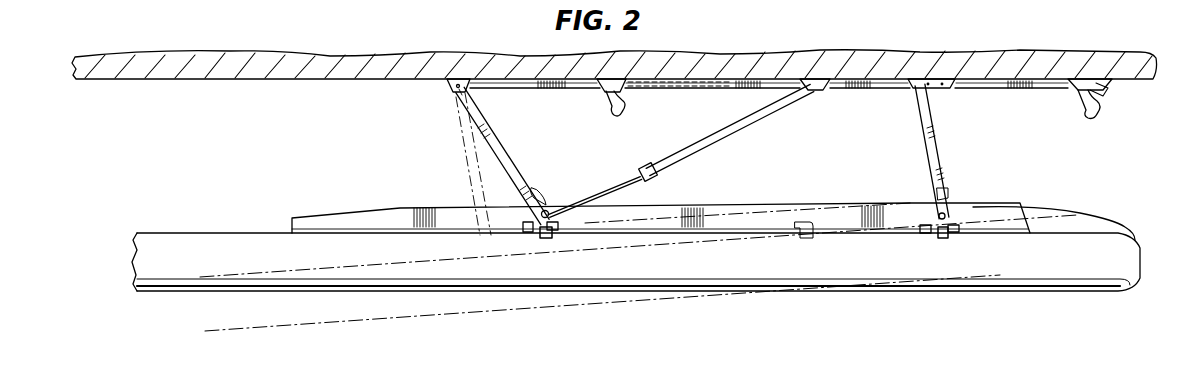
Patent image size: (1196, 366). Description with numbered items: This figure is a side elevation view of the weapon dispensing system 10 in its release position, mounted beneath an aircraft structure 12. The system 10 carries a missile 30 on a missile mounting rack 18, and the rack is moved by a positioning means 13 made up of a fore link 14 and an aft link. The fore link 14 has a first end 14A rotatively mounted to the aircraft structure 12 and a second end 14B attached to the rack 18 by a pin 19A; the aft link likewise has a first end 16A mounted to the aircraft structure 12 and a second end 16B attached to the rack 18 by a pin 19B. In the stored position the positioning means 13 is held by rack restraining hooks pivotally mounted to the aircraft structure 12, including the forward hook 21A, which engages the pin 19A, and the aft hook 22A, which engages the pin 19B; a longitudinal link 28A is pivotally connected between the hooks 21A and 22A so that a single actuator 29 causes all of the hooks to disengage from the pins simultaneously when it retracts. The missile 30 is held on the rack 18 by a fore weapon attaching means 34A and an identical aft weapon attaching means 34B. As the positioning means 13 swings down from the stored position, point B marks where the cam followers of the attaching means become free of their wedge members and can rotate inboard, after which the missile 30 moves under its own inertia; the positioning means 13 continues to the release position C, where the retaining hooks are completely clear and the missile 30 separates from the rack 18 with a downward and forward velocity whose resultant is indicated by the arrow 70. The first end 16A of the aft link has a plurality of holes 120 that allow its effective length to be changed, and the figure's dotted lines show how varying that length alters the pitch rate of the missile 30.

The weapon dispensing system 10 is at (1078, 50).
The aircraft structure 12 is at (1030, 34).
The holes 120 is at (940, 76).
The positioning means 13 is at (720, 140).
The fore link 14 is at (510, 158).
The first end of fore link 14A is at (456, 91).
The second end of fore link 14B is at (527, 213).
The first end of aft link 16A is at (929, 104).
The second end of aft link 16B is at (933, 213).
The missile mounting rack 18 is at (350, 218).
The pin 19A is at (541, 206).
The pin 19B is at (950, 210).
The forward rack restraining hook 21A is at (630, 112).
The aft rack restraining hook 22A is at (1098, 111).
The longitudinal link 28A is at (878, 93).
The actuator 29 is at (1103, 90).
The missile 30 is at (740, 275).
The fore weapon attaching means 34A is at (558, 245).
The aft weapon attaching means 34B is at (937, 240).
The arrow 70 is at (368, 10).
The point B is at (542, 238).
The position C is at (488, 238).